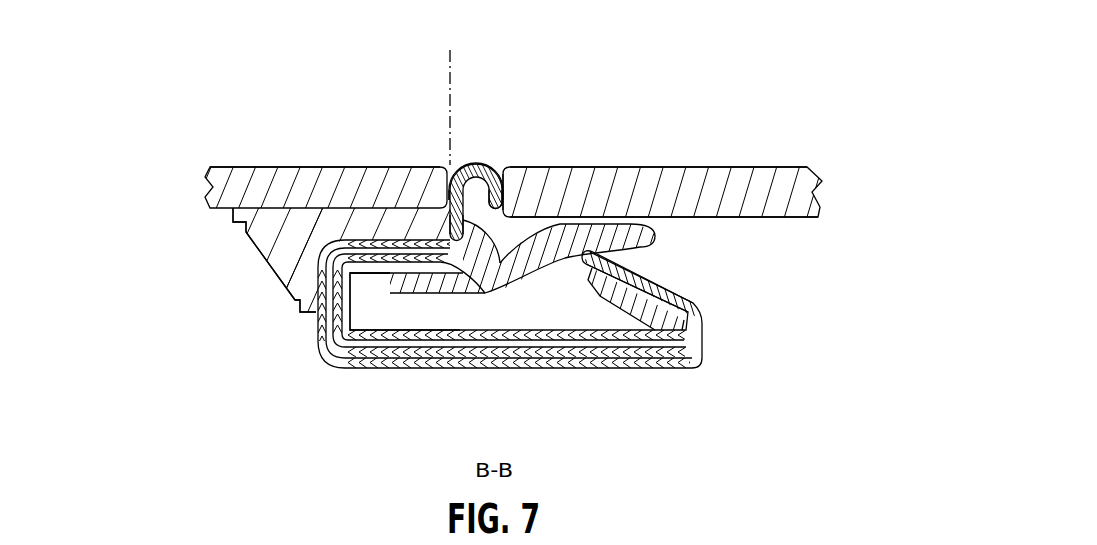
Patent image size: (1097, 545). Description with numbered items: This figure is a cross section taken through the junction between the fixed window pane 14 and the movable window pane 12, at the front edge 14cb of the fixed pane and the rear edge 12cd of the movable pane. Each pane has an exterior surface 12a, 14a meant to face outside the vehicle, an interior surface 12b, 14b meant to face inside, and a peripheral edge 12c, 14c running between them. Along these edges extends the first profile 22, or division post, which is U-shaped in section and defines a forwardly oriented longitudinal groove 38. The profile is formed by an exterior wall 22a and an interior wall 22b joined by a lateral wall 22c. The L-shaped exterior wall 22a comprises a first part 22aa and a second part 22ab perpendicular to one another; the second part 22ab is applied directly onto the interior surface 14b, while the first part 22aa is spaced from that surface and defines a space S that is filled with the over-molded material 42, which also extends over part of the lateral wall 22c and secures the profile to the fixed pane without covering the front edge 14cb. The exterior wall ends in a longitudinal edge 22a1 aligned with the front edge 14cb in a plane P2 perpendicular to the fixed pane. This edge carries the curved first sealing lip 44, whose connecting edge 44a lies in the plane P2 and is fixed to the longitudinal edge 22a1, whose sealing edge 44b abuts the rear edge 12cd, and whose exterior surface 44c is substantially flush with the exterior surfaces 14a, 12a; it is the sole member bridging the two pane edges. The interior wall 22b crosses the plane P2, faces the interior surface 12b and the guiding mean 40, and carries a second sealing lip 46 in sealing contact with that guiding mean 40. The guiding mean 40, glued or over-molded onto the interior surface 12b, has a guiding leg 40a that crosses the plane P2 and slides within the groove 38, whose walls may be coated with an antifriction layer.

The movable window pane 12 is at (799, 162).
The exterior surface 12a is at (747, 167).
The interior surface 12b is at (797, 218).
The peripheral edge 12c is at (505, 207).
The rear edge 12cd is at (629, 172).
The fixed window pane 14 is at (203, 158).
The exterior surface 14a is at (287, 167).
The interior surface 14b is at (268, 207).
The peripheral edge 14c is at (460, 165).
The front edge 14cb is at (508, 130).
The first profile 22 is at (596, 375).
The exterior wall 22a is at (387, 240).
The first part 22aa is at (340, 234).
The second part 22ab is at (427, 243).
The longitudinal edge 22a1 is at (443, 272).
The interior wall 22b is at (470, 363).
The lateral wall 22c is at (313, 333).
The longitudinal groove 38 is at (382, 308).
The guiding mean 40 is at (555, 267).
The guiding leg 40a is at (298, 300).
The over-molded material 42 is at (283, 255).
The first sealing lip 44 is at (492, 162).
The longitudinal connecting edge 44a is at (500, 243).
The longitudinal sealing edge 44b is at (507, 206).
The exterior surface 44c is at (472, 165).
The second sealing lip 46 is at (698, 300).
The space S is at (313, 229).
The plane P2 is at (448, 75).